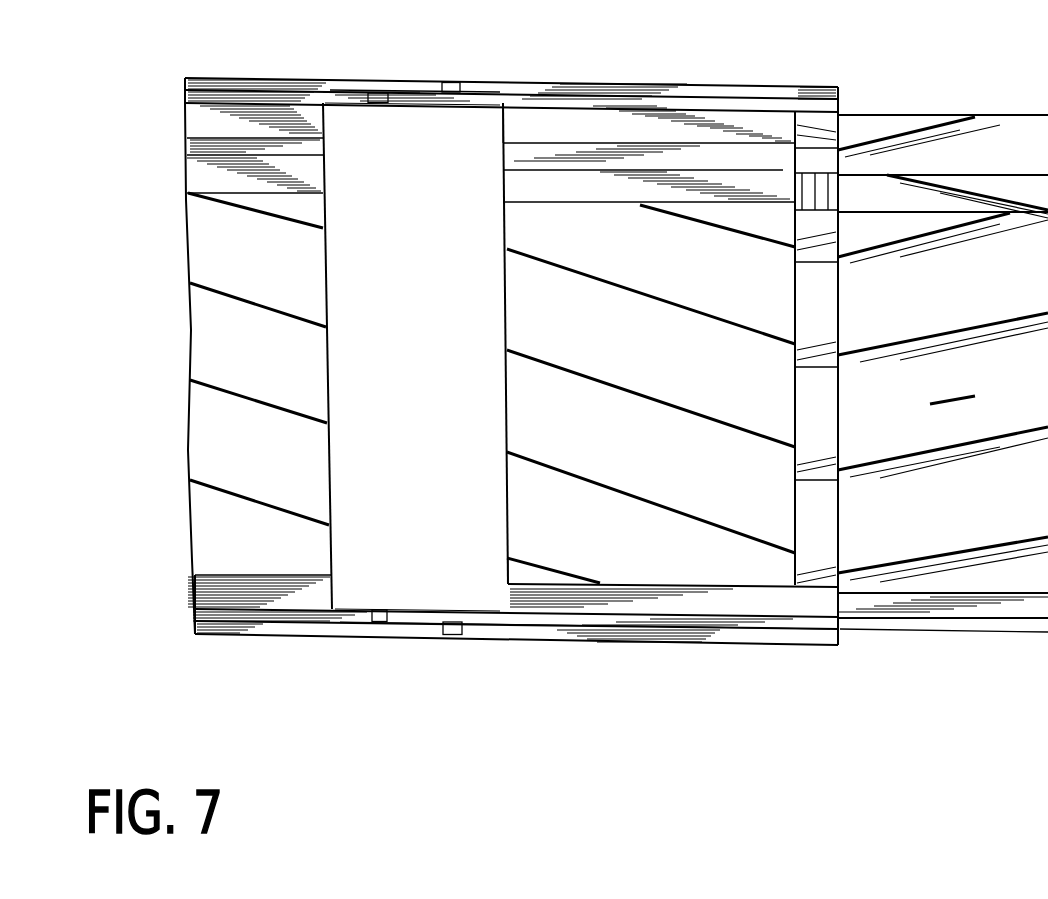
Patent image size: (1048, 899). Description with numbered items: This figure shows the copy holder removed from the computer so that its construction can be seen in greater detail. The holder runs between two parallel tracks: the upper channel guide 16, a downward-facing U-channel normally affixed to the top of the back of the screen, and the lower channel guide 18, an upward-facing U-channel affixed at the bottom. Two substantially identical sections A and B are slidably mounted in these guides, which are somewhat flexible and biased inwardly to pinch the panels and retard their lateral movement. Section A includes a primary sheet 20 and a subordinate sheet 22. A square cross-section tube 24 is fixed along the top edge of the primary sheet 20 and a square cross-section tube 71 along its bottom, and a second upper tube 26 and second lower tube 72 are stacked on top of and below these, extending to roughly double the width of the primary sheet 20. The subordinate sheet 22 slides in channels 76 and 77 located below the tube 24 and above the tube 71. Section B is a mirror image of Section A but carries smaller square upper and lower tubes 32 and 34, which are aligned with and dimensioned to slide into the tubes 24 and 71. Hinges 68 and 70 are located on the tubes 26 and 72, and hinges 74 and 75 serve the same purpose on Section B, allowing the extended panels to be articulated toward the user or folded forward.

The upper channel guide 16 is at (535, 84).
The lower channel guide 18 is at (239, 637).
The primary sheet 20 is at (652, 354).
The subordinate sheet 22 is at (972, 398).
The square cross-section tube 24 is at (840, 104).
The second upper tube 26 is at (405, 81).
The upper tube 32 is at (342, 104).
The lower tube 34 is at (350, 609).
The hinge 68 is at (456, 86).
The hinge 70 is at (453, 640).
The square cross-section tube 71 is at (842, 631).
The second lower tube 72 is at (400, 630).
The hinge 74 is at (379, 107).
The hinge 75 is at (382, 608).
The channel 76 is at (492, 224).
The channel 77 is at (495, 125).
The section A is at (793, 110).
The section B is at (235, 213).